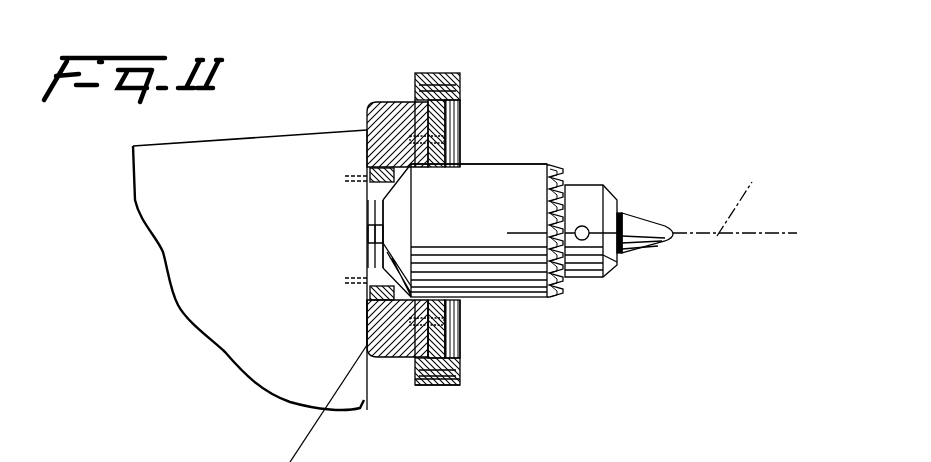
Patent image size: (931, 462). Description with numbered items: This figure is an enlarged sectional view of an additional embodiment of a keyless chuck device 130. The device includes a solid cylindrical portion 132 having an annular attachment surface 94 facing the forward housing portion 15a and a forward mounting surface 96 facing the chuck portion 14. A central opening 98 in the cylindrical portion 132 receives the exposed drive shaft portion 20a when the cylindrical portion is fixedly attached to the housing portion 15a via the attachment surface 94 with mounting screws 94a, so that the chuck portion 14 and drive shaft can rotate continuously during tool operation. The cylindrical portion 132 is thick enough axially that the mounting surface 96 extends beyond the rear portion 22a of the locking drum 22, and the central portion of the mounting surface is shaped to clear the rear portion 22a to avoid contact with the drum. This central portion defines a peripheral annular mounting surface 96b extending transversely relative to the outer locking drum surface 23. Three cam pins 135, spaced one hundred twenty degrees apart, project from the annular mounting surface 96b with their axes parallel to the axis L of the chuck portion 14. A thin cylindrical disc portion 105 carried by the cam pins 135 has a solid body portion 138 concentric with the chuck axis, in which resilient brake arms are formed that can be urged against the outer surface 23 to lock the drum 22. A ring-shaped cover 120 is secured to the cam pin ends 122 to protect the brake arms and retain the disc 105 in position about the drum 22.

The exposed drive shaft portion 20a is at (382, 228).
The annular attachment surface 94 is at (367, 330).
The forward housing portion 15a is at (367, 322).
The solid cylindrical portion 132 is at (385, 117).
The thin cylindrical disc portion 105 is at (463, 93).
The ring shaped cover 120 is at (460, 110).
The cam pins 135 is at (458, 128).
The central opening 98 is at (385, 258).
The rear portion of locking drum 22a is at (380, 190).
The mounting screws 94a is at (372, 170).
The outer locking drum surface 23 is at (465, 161).
The cam pin ends 122 is at (446, 166).
The locking drum 22 is at (525, 185).
The axis of chuck L is at (652, 200).
The forward mounting surface 96 is at (458, 340).
The annular mounting surface 96b is at (458, 357).
The solid body portion 138 is at (457, 368).
The keyless chuck device 130 is at (480, 70).
The chuck portion 14 is at (542, 308).